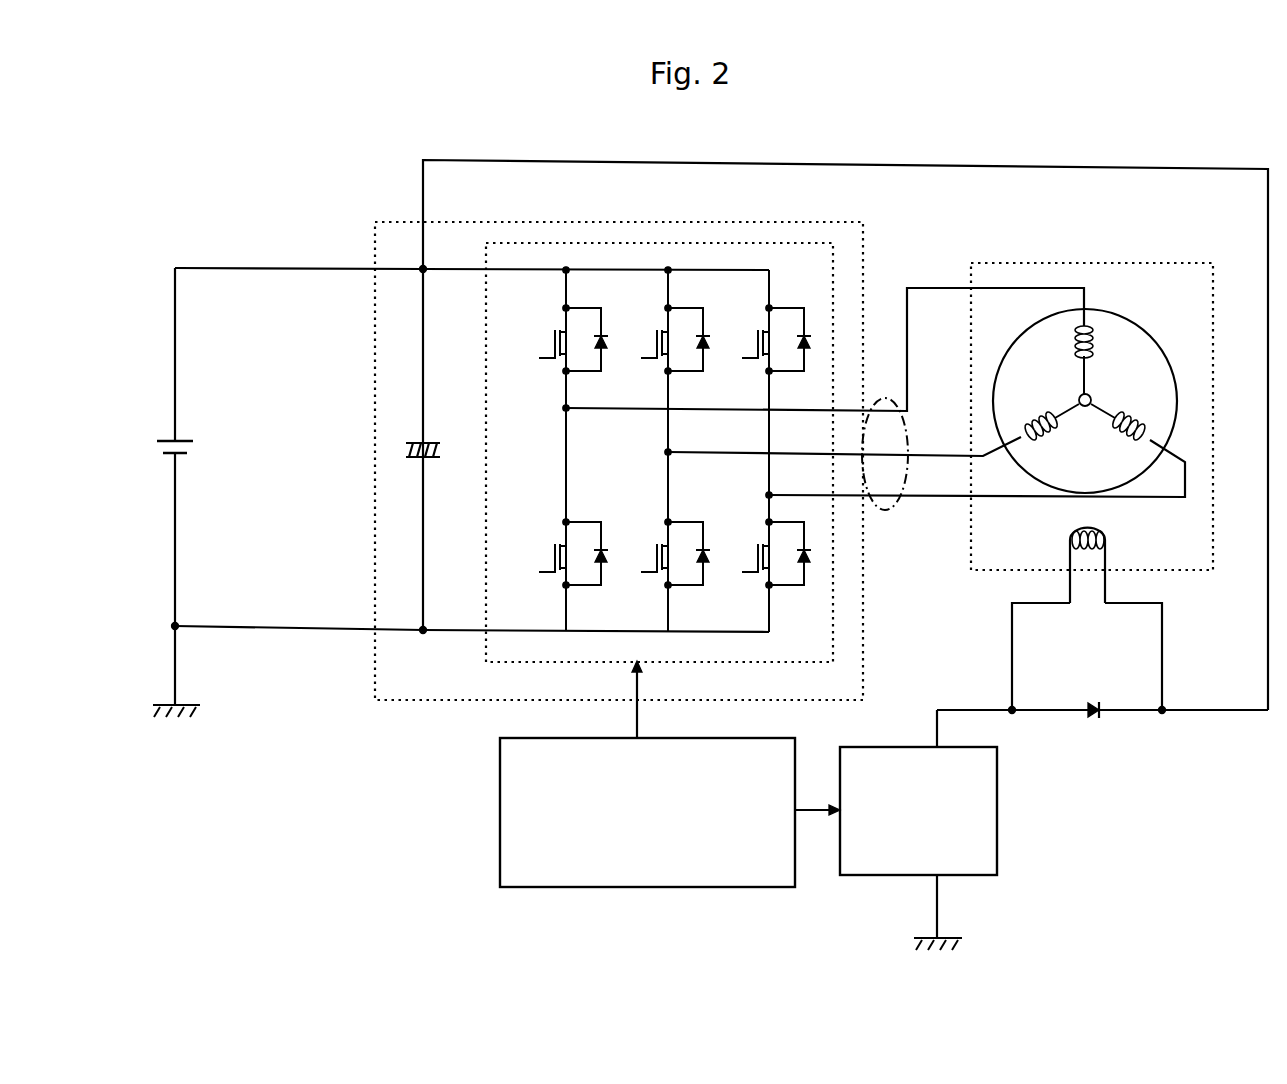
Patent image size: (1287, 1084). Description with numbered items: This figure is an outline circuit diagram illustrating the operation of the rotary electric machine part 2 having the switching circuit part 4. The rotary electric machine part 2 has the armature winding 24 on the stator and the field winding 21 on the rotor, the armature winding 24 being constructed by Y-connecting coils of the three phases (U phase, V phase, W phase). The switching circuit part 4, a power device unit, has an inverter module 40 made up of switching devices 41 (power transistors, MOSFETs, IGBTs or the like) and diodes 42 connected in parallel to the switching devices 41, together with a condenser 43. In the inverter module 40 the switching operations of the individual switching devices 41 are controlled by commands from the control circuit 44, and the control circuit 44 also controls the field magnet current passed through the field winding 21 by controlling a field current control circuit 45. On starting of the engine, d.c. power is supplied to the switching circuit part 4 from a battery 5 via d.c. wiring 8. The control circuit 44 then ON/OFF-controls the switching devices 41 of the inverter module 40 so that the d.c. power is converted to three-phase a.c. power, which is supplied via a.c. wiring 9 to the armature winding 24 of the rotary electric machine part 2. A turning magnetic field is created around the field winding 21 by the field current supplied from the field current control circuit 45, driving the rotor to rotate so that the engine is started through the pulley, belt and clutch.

The rotary electric machine part 2 is at (1140, 258).
The switching circuit part 4 is at (868, 250).
The battery 5 is at (200, 450).
The d.c. wiring 8 is at (275, 270).
The a.c. wiring 9 is at (900, 514).
The field winding 21 is at (1118, 547).
The armature winding 24 is at (1150, 325).
The inverter module 40 is at (619, 440).
The switching devices 41 is at (541, 535).
The diodes 42 is at (615, 545).
The condenser 43 is at (442, 470).
The control circuit 44 is at (495, 804).
The field current control circuit 45 is at (1000, 810).